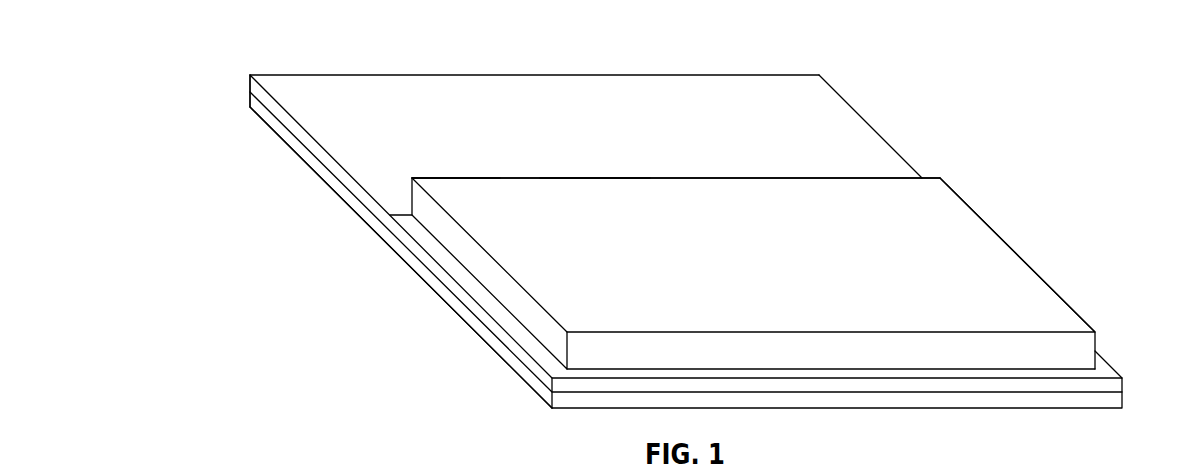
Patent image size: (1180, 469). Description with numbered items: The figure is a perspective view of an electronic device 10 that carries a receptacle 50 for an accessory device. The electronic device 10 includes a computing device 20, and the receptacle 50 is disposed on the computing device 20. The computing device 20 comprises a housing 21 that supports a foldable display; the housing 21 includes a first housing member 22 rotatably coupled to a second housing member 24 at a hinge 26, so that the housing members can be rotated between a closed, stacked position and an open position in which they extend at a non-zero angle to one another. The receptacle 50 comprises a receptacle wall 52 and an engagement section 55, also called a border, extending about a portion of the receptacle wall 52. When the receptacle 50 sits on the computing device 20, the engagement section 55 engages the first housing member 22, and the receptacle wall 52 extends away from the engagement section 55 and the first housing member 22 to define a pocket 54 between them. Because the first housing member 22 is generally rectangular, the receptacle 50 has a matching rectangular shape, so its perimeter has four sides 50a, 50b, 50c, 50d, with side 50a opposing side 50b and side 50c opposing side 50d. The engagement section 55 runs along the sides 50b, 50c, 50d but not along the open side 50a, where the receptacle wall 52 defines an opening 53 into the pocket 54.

The electronic device 10 is at (1009, 100).
The computing device 20 is at (293, 72).
The housing 21 is at (503, 102).
The first housing member 22 is at (757, 98).
The second housing member 24 is at (364, 222).
The hinge 26 is at (248, 86).
The receptacle 50 is at (1023, 252).
The open side 50a is at (892, 177).
The side 50b is at (1025, 382).
The side 50c is at (450, 275).
The side 50d is at (1102, 357).
The receptacle wall 52 is at (727, 212).
The opening 53 is at (597, 177).
The pocket 54 is at (457, 177).
The engagement section 55 is at (522, 335).